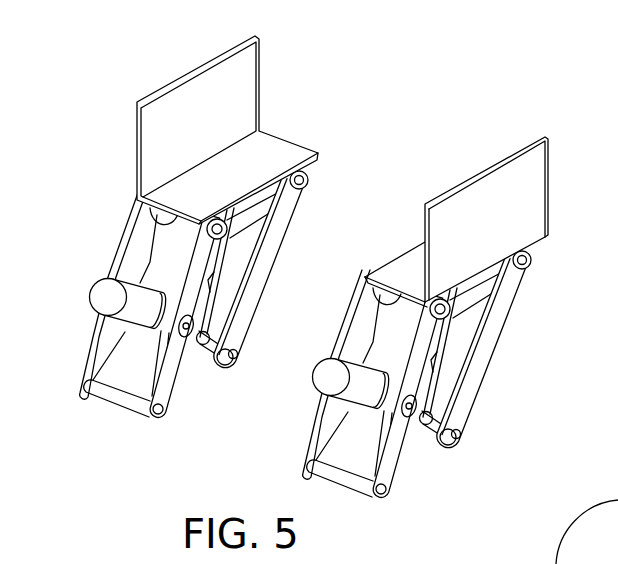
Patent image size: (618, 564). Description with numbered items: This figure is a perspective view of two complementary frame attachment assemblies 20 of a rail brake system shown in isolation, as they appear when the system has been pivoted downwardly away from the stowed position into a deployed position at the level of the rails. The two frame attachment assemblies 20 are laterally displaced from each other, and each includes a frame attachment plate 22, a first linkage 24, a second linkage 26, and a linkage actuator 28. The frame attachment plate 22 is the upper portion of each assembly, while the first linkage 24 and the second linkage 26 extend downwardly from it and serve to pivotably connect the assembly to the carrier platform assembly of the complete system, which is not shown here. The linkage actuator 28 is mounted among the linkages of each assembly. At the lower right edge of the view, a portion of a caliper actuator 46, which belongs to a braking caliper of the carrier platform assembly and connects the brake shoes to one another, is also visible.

The frame attachment assembly 20 is at (300, 66).
The frame attachment plate 22 is at (136, 114).
The first linkage 24 is at (86, 364).
The second linkage 26 is at (273, 234).
The linkage actuator 28 is at (98, 292).
The caliper actuator 46 is at (563, 540).